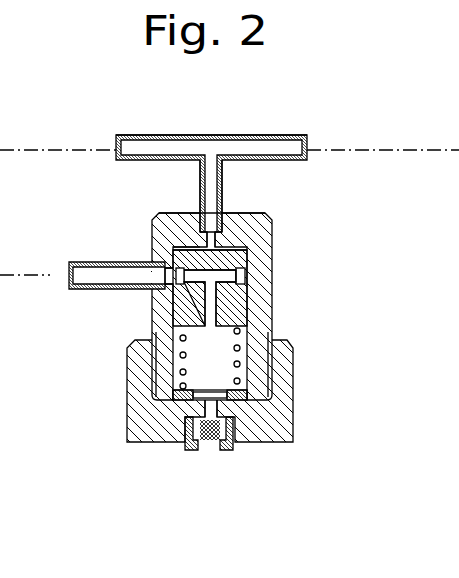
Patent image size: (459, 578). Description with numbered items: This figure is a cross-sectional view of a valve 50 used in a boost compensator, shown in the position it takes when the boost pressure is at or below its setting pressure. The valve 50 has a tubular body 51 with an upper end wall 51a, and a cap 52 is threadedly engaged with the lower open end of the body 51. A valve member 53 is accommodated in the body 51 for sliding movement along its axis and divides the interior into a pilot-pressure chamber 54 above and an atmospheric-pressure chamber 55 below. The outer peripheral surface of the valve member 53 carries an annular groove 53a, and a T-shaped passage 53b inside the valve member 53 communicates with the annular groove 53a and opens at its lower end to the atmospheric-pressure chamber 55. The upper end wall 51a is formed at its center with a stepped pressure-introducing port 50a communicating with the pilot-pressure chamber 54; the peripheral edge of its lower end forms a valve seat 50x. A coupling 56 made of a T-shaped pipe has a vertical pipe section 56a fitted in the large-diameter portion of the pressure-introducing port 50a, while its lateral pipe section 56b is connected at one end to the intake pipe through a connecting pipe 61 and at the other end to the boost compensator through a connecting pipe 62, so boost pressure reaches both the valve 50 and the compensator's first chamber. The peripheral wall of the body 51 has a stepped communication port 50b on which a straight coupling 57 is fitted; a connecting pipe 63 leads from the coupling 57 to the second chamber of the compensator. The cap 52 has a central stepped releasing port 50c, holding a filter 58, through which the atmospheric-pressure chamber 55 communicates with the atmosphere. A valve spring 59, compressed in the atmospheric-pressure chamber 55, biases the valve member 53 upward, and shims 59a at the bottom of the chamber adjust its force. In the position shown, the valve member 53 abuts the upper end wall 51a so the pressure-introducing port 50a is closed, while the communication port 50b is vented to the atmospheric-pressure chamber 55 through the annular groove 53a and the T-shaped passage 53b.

The valve 50 is at (293, 233).
The pressure-introducing port 50a is at (211, 240).
The communication port 50b is at (167, 275).
The releasing port 50c is at (200, 417).
The valve seat 50x is at (190, 238).
The body 51 is at (272, 290).
The upper end wall 51a is at (234, 216).
The cap 52 is at (293, 428).
The valve member 53 is at (262, 311).
The annular groove 53a is at (252, 271).
The T-shaped passage 53b is at (208, 300).
The pilot-pressure chamber 54 is at (268, 249).
The atmospheric-pressure chamber 55 is at (242, 358).
The coupling 56 is at (222, 134).
The vertical pipe section 56a is at (222, 178).
The lateral pipe section 56b is at (205, 135).
The coupling 57 is at (92, 262).
The filter 58 is at (211, 450).
The valve spring 59 is at (186, 356).
The shims 59a is at (242, 402).
The connecting pipe 61 is at (389, 147).
The connecting pipe 62 is at (45, 130).
The connecting pipe 63 is at (43, 280).